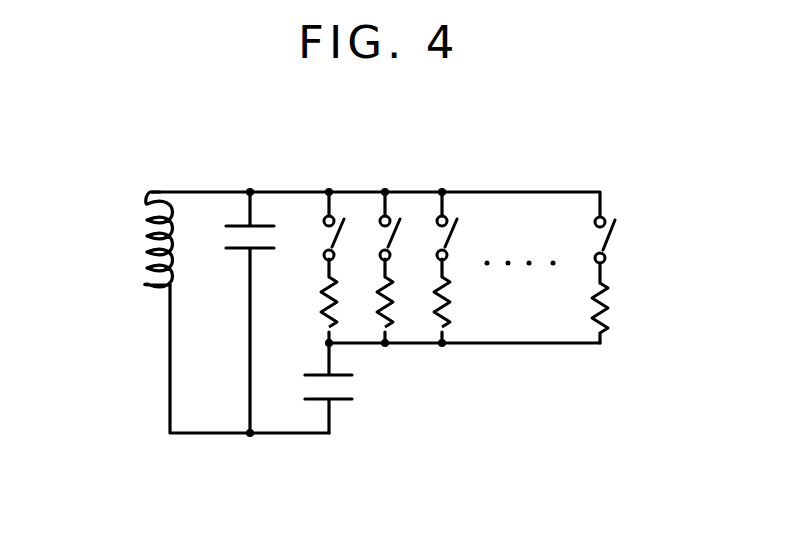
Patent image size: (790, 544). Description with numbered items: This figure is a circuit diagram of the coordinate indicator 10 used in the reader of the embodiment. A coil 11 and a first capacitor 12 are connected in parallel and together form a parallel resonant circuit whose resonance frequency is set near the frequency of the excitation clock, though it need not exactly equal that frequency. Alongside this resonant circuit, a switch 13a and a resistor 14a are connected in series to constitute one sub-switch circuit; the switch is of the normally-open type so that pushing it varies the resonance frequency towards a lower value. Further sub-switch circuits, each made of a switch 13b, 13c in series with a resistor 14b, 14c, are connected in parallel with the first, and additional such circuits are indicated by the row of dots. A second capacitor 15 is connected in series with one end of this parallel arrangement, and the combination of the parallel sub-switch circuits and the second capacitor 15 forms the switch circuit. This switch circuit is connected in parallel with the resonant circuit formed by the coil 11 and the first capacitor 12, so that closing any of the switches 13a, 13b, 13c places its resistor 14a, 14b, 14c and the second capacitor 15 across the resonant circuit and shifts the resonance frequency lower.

The tuning circuit 10 is at (141, 487).
The coil 11 is at (158, 188).
The first capacitor 12 is at (272, 235).
The switch 13a is at (343, 235).
The switch 13b is at (393, 235).
The switch 13c is at (455, 238).
The resistor 14a is at (338, 307).
The resistor 14b is at (394, 307).
The resistor 14c is at (450, 307).
The second capacitor 15 is at (349, 388).